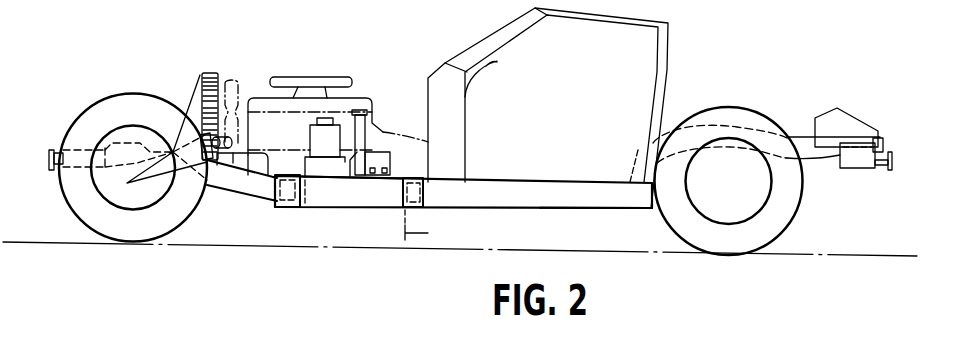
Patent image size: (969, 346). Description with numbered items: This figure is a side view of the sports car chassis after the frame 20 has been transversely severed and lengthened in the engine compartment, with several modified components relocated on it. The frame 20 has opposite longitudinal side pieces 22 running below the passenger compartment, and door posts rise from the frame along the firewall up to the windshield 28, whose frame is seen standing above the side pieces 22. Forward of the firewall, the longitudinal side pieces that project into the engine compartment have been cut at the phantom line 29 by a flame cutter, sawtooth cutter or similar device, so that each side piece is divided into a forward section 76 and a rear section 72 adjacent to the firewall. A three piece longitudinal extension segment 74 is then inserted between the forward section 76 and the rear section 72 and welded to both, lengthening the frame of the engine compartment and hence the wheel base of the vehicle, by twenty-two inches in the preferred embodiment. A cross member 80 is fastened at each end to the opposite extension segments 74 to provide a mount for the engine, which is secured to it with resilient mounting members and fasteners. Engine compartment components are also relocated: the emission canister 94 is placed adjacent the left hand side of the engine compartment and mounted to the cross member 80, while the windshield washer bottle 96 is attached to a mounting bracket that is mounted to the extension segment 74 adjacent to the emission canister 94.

The frame 20 is at (587, 197).
The longitudinal side pieces 22 is at (645, 200).
The windshield 28 is at (490, 33).
The phantom line 29 is at (430, 227).
The rear section 72 is at (445, 197).
The three piece longitudinal extension segment 74 is at (352, 193).
The forward section 76 is at (262, 185).
The cross member 80 is at (249, 162).
The emission canister 94 is at (327, 157).
The windshield washer bottle 96 is at (386, 177).